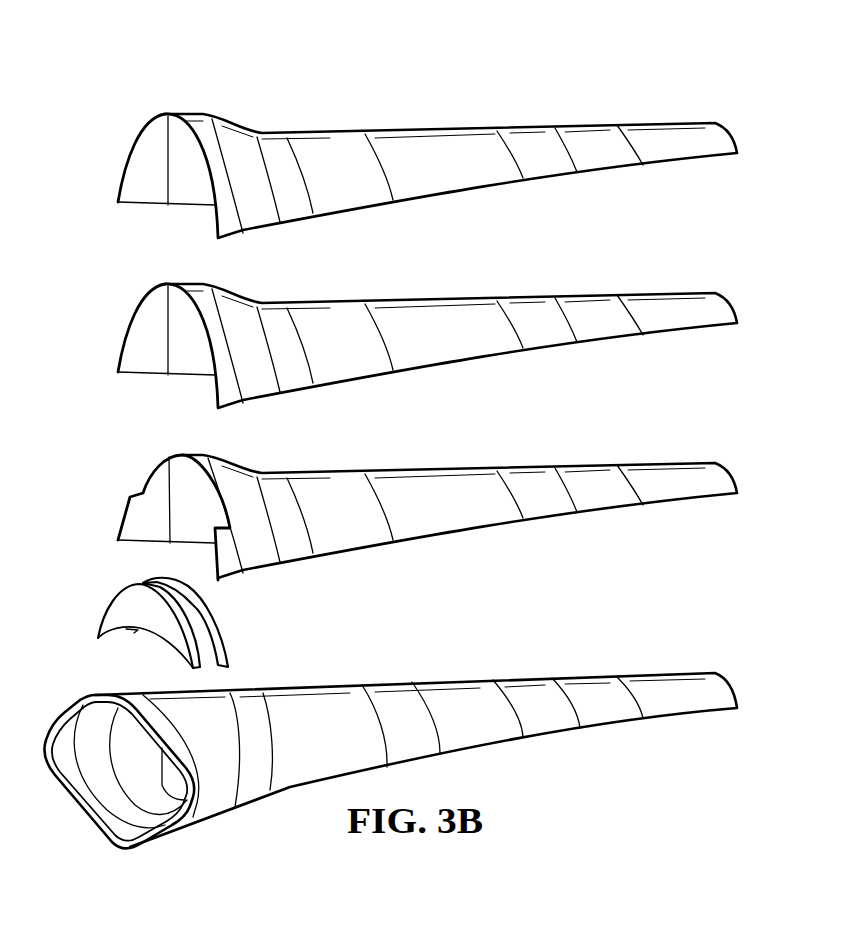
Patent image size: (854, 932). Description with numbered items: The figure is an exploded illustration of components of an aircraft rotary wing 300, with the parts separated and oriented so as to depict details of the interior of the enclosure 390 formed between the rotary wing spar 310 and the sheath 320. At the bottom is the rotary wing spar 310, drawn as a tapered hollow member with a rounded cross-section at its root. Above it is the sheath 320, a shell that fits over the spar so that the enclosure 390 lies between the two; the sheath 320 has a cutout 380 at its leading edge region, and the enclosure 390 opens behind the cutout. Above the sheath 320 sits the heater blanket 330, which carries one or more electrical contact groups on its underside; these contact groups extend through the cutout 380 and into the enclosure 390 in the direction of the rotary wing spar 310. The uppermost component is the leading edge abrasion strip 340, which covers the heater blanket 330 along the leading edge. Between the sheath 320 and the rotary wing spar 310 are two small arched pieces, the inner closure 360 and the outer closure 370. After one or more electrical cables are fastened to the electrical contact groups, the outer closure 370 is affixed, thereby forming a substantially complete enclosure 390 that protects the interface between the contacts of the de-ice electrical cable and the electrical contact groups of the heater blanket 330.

The rotary wing 300 is at (561, 64).
The rotary wing spar 310 is at (673, 673).
The sheath 320 is at (676, 462).
The heater blanket 330 is at (676, 292).
The leading edge abrasion strip 340 is at (676, 122).
The inner closure 360 is at (223, 638).
The outer closure 370 is at (113, 610).
The cutout 380 is at (140, 486).
The enclosure 390 is at (257, 555).